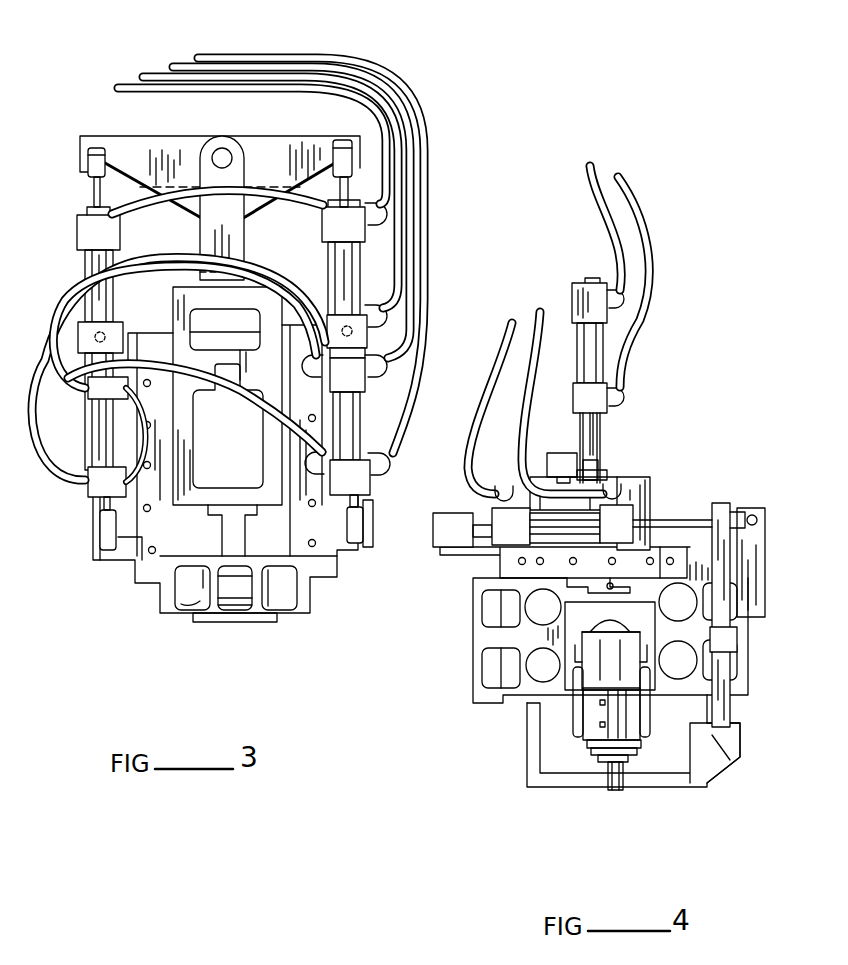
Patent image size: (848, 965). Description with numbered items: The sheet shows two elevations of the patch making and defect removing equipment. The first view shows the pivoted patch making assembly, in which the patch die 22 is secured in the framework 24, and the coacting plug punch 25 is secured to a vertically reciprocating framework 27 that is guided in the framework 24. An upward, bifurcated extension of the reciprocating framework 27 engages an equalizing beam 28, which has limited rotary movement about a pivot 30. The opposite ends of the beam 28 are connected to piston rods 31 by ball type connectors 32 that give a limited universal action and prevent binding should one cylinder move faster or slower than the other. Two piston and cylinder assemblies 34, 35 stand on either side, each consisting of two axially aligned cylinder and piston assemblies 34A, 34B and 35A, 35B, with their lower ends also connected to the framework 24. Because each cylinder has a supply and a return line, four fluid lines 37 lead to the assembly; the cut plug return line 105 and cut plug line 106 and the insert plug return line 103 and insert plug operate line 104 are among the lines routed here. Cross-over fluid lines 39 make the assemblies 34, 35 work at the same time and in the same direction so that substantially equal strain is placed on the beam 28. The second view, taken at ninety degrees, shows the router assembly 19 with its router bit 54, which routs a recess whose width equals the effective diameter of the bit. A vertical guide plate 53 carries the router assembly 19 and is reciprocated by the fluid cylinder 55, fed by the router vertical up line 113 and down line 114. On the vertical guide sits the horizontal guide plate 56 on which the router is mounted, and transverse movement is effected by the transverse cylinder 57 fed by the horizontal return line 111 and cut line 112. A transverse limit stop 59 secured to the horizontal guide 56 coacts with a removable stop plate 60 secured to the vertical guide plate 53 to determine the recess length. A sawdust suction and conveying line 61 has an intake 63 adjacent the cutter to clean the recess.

In FIG. 4, the router assembly 19 is at (574, 773).
In FIG. 3, the patch die 22 is at (200, 603).
In FIG. 3, the framework 24 is at (168, 542).
In FIG. 4, the framework 24 is at (738, 645).
In FIG. 3, the plug punch 25 is at (203, 588).
In FIG. 3, the reciprocating framework 27 is at (192, 490).
In FIG. 3, the equalizing beam 28 is at (158, 165).
In FIG. 3, the pivot 30 is at (221, 149).
In FIG. 3, the piston rods 31 is at (95, 196).
In FIG. 3, the ball type connectors 32 is at (92, 160).
In FIG. 3, the cylinder assembly 34 is at (71, 352).
In FIG. 3, the cylinder and piston assembly 34A is at (100, 434).
In FIG. 3, the cylinder and piston assembly 34B is at (100, 265).
In FIG. 3, the cylinder assembly 35 is at (364, 347).
In FIG. 3, the cylinder and piston assembly 35A is at (356, 432).
In FIG. 3, the cylinder and piston assembly 35B is at (340, 260).
In FIG. 3, the fluid lines 37 is at (254, 244).
In FIG. 3, the cross-over fluid lines 39 is at (140, 297).
In FIG. 4, the vertical guide plate 53 is at (668, 490).
In FIG. 4, the router bit 54 is at (626, 788).
In FIG. 4, the fluid cylinder 55 is at (592, 338).
In FIG. 4, the horizontal guide plate 56 is at (466, 654).
In FIG. 4, the transverse cylinder 57 is at (500, 558).
In FIG. 4, the transverse limit stop 59 is at (600, 593).
In FIG. 4, the stop plate 60 is at (525, 568).
In FIG. 4, the sawdust suction and conveying line 61 is at (731, 712).
In FIG. 4, the intake 63 is at (696, 792).
In FIG. 3, the insert plug in panel return line 103 is at (143, 78).
In FIG. 3, the insert plug in panel operate line 104 is at (118, 90).
In FIG. 3, the cut plug return line 105 is at (173, 66).
In FIG. 3, the cut plug line 106 is at (198, 57).
In FIG. 4, the router horizontal movement return line 111 is at (508, 323).
In FIG. 4, the router horizontal movement cut line 112 is at (538, 312).
In FIG. 4, the router vertical movement up line 113 is at (622, 177).
In FIG. 4, the router vertical movement down line 114 is at (586, 166).